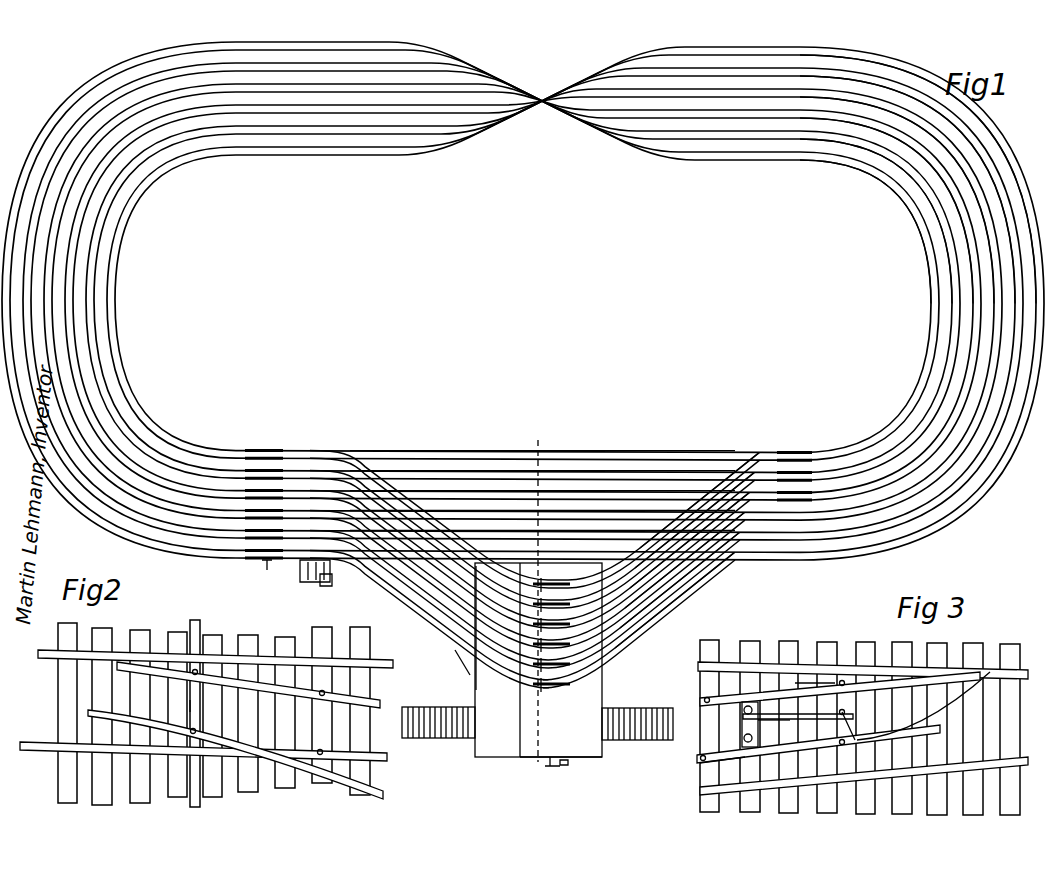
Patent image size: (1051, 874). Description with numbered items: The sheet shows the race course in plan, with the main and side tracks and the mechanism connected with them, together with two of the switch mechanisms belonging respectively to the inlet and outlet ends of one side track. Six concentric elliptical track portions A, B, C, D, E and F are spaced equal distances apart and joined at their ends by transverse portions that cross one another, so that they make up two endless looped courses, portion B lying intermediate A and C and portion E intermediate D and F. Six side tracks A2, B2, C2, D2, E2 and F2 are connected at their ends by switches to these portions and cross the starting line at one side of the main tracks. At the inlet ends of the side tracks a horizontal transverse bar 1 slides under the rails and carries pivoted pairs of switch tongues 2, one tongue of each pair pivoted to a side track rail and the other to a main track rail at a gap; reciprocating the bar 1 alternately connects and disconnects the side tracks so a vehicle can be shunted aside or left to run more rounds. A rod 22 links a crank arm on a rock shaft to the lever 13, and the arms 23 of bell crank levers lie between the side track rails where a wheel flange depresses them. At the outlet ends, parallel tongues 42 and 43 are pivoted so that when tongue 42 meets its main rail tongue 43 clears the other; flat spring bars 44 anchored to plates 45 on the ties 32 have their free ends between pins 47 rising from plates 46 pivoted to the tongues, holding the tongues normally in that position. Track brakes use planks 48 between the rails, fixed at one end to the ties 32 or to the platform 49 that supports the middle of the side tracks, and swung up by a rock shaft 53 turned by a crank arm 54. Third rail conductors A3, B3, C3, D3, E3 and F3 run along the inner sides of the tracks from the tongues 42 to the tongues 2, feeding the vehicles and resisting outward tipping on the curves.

In FIG. 1, the plank 48 is at (275, 478).
In FIG. 1, the pin 47 is at (762, 456).
In FIG. 3, the pin 47 is at (822, 718).
In FIG. 1, the switch tongue 43 is at (779, 462).
In FIG. 3, the switch tongue 43 is at (872, 720).
In FIG. 1, the platform 49 is at (537, 601).
In FIG. 1, the rock shaft 53 is at (551, 768).
In FIG. 1, the crank arm 54 is at (566, 765).
In FIG. 1, the lever 13 is at (324, 584).
In FIG. 1, the rod 22 is at (465, 690).
In FIG. 1, the bell crank lever arm 23 is at (476, 580).
In FIG. 2, the transverse bar 1 is at (195, 704).
In FIG. 2, the switch tongue 2 is at (130, 716).
In FIG. 3, the switch tongue 42 is at (806, 683).
In FIG. 3, the flat spring bar 44 is at (766, 718).
In FIG. 3, the plate 45 is at (748, 702).
In FIG. 3, the horizontal plate 46 is at (975, 680).
In FIG. 3, the cross tie 32 is at (720, 770).
In FIG. 1, the main track portion A is at (551, 449).
In FIG. 2, the main track portion A is at (229, 654).
In FIG. 3, the main track portion A is at (728, 660).
In FIG. 1, the main track portion B is at (684, 450).
In FIG. 1, the main track portion C is at (652, 492).
In FIG. 1, the main track portion D is at (622, 517).
In FIG. 1, the main track portion E is at (590, 537).
In FIG. 1, the main track portion F is at (563, 557).
In FIG. 1, the side track A2 is at (699, 522).
In FIG. 2, the side track A2 is at (340, 703).
In FIG. 3, the side track A2 is at (705, 700).
In FIG. 1, the side track B2 is at (694, 538).
In FIG. 1, the side track C2 is at (689, 555).
In FIG. 1, the side track D2 is at (684, 575).
In FIG. 1, the side track E2 is at (679, 595).
In FIG. 1, the side track F2 is at (675, 614).
In FIG. 1, the third rail conductor A3 is at (926, 303).
In FIG. 1, the third rail conductor B3 is at (947, 318).
In FIG. 1, the third rail conductor C3 is at (965, 352).
In FIG. 1, the third rail conductor D3 is at (977, 380).
In FIG. 1, the third rail conductor E3 is at (989, 410).
In FIG. 1, the third rail conductor F3 is at (999, 438).